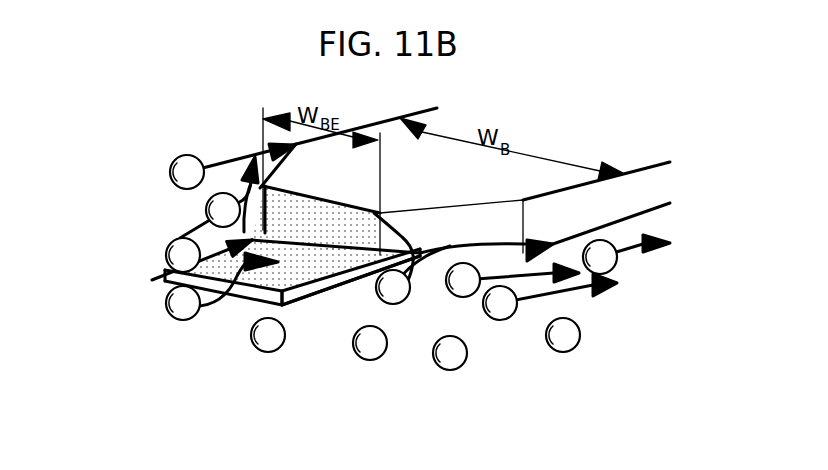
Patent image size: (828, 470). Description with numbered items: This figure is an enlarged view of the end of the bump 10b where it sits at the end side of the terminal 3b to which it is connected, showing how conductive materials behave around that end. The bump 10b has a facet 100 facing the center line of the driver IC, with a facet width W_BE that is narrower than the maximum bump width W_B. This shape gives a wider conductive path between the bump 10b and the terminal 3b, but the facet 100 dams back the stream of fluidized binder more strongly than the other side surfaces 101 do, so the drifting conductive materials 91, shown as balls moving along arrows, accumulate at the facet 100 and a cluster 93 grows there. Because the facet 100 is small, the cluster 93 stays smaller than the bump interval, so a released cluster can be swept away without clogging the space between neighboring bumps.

The terminal 3b is at (250, 292).
The bump 10b is at (453, 186).
The conductive materials 91 is at (183, 255).
The cluster 93 is at (343, 300).
The facet 100 is at (296, 217).
The other side surfaces 101 is at (543, 217).